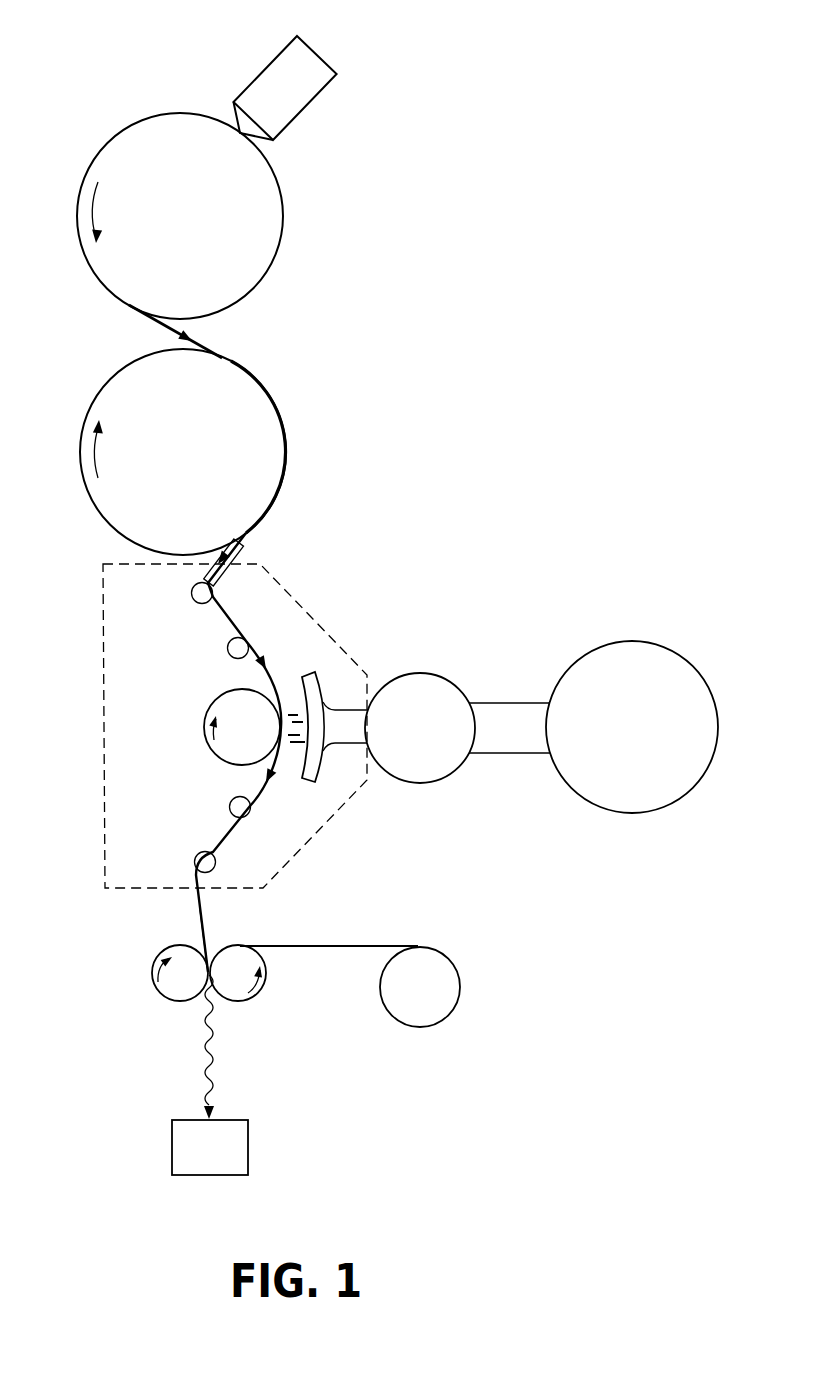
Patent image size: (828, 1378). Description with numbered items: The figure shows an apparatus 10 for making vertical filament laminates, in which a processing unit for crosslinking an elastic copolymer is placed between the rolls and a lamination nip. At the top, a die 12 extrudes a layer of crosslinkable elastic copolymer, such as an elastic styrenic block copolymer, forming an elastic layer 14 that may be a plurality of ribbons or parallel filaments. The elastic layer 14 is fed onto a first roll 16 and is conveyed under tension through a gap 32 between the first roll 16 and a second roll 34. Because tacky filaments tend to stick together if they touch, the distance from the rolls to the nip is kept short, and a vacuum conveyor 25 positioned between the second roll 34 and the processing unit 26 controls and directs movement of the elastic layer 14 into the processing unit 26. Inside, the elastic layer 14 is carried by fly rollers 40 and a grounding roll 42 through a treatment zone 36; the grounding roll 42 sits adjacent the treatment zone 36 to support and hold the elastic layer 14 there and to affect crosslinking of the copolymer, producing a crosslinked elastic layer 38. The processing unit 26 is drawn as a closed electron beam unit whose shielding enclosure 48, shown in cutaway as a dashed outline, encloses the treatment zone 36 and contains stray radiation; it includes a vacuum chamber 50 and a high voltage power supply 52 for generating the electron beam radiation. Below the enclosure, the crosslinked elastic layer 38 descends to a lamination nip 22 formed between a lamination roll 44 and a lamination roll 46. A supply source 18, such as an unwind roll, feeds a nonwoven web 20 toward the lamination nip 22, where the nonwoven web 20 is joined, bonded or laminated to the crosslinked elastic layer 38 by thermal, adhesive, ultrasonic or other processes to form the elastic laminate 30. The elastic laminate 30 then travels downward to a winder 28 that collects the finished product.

The apparatus 10 is at (391, 199).
The die 12 is at (265, 68).
The elastic layer 14 is at (233, 132).
The first roll 16 is at (283, 205).
The supply source 18 is at (462, 982).
The nonwoven web 20 is at (327, 945).
The lamination nip 22 is at (183, 1001).
The vacuum conveyor 25 is at (247, 553).
The processing unit 26 is at (503, 697).
The winder 28 is at (225, 1159).
The elastic laminate 30 is at (215, 1077).
The gap 32 is at (61, 339).
The second roll 34 is at (82, 480).
The treatment zone 36 is at (292, 721).
The crosslinked elastic layer 38 is at (205, 928).
The fly rollers 40 is at (227, 647).
The grounding roll 42 is at (205, 720).
The lamination roll 44 is at (175, 1002).
The lamination roll 46 is at (255, 997).
The shielding enclosure 48 is at (310, 598).
The vacuum chamber 50 is at (432, 673).
The high voltage power supply 52 is at (675, 650).